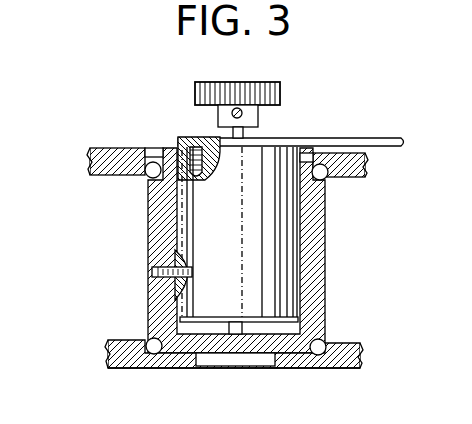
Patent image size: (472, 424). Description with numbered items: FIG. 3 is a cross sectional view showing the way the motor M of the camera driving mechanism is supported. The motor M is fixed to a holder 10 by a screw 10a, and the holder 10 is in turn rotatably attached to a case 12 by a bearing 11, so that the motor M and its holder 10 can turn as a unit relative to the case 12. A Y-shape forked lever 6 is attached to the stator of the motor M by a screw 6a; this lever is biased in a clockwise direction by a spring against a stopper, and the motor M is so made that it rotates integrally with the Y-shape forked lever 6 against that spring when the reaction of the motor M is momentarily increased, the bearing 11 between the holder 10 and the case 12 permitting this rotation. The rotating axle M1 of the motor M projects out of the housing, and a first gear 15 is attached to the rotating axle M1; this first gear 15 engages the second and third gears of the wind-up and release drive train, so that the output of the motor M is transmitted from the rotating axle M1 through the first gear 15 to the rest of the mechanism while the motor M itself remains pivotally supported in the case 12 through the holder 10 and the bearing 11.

The Y-shape forked lever 6 is at (376, 138).
The screw 6a is at (197, 138).
The holder 10 is at (313, 298).
The screw 10a is at (152, 272).
The bearing 11 is at (150, 160).
The case 12 is at (129, 356).
The first gear 15 is at (283, 92).
The motor M is at (275, 226).
The rotating axle M1 is at (245, 131).